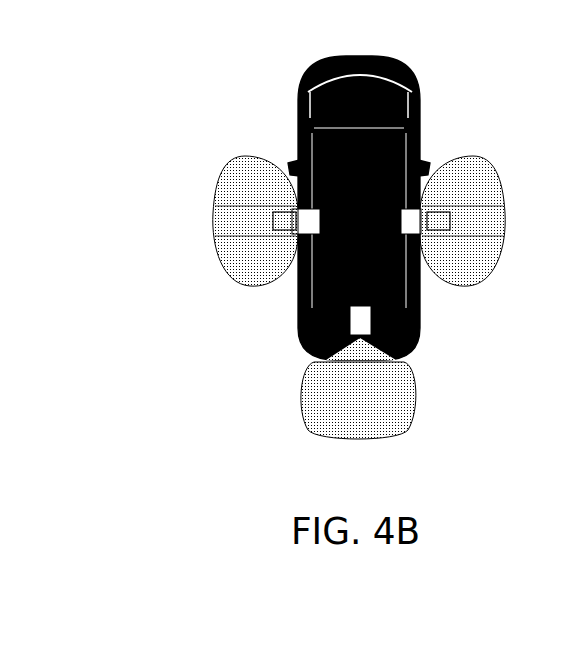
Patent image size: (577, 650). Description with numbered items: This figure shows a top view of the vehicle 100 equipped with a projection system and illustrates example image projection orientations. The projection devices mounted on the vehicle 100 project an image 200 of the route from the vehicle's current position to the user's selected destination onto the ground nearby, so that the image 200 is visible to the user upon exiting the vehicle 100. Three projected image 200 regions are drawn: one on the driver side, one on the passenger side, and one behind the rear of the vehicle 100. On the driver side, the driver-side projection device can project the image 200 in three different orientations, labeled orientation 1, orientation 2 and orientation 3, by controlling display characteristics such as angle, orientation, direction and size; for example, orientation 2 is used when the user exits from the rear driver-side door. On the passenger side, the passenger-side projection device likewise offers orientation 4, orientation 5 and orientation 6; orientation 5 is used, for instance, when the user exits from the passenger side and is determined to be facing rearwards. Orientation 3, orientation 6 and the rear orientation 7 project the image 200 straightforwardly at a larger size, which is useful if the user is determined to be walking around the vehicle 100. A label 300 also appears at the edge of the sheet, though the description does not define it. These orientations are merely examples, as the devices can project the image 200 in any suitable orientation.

The vehicle 100 is at (396, 41).
The image 200 is at (214, 259).
The sensor system 300 is at (214, 261).
The orientation # 1 is at (245, 193).
The orientation # 2 is at (249, 270).
The orientation # 3 is at (266, 223).
The orientation # 4 is at (469, 196).
The orientation # 5 is at (471, 271).
The orientation # 6 is at (453, 223).
The orientation # 7 is at (356, 398).